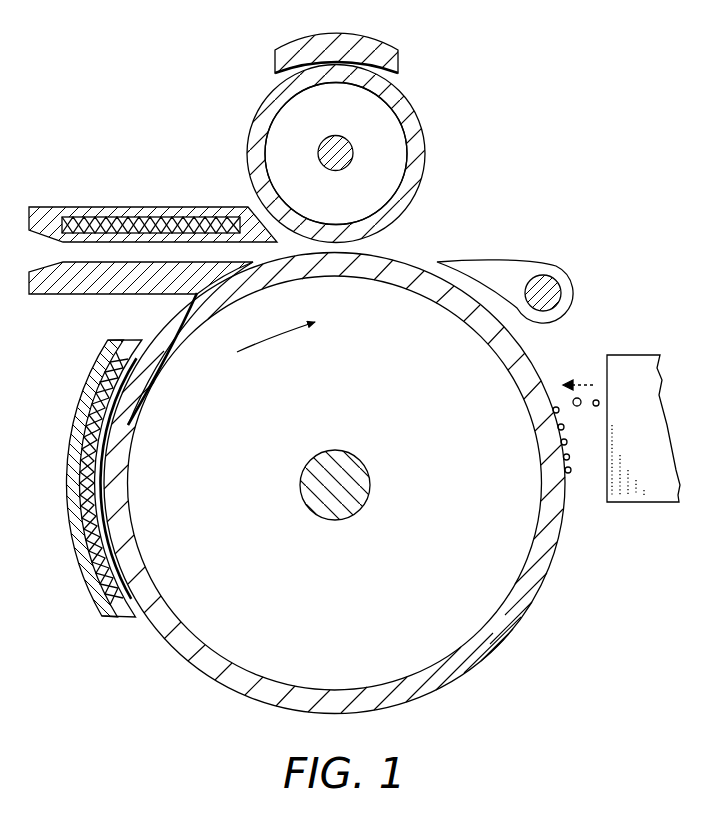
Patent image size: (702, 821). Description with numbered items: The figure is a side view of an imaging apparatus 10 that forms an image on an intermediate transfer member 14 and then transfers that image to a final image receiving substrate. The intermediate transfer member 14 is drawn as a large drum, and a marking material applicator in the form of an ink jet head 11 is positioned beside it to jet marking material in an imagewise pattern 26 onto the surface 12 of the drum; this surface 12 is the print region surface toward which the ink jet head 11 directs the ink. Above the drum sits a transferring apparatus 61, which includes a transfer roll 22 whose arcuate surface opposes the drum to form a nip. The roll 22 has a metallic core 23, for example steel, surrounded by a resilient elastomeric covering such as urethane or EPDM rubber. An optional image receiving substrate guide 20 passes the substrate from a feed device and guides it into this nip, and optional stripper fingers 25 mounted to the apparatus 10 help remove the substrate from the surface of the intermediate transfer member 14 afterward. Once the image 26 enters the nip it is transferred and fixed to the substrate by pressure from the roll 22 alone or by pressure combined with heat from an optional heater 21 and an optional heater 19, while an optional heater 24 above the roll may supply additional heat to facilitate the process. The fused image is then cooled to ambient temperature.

The imaging apparatus 10 is at (539, 43).
The ink jet head 11 is at (657, 368).
The surface 12 is at (540, 606).
The intermediate transfer member 14 is at (497, 622).
The heater 19 is at (66, 476).
The image receiving substrate guide 20 is at (103, 296).
The heater 21 is at (103, 206).
The transfer roll 22 is at (426, 139).
The metallic core 23 is at (275, 143).
The heater 24 is at (276, 62).
The stripper fingers 25 is at (566, 307).
The imagewise pattern 26 is at (575, 477).
The transferring apparatus 61 is at (476, 176).